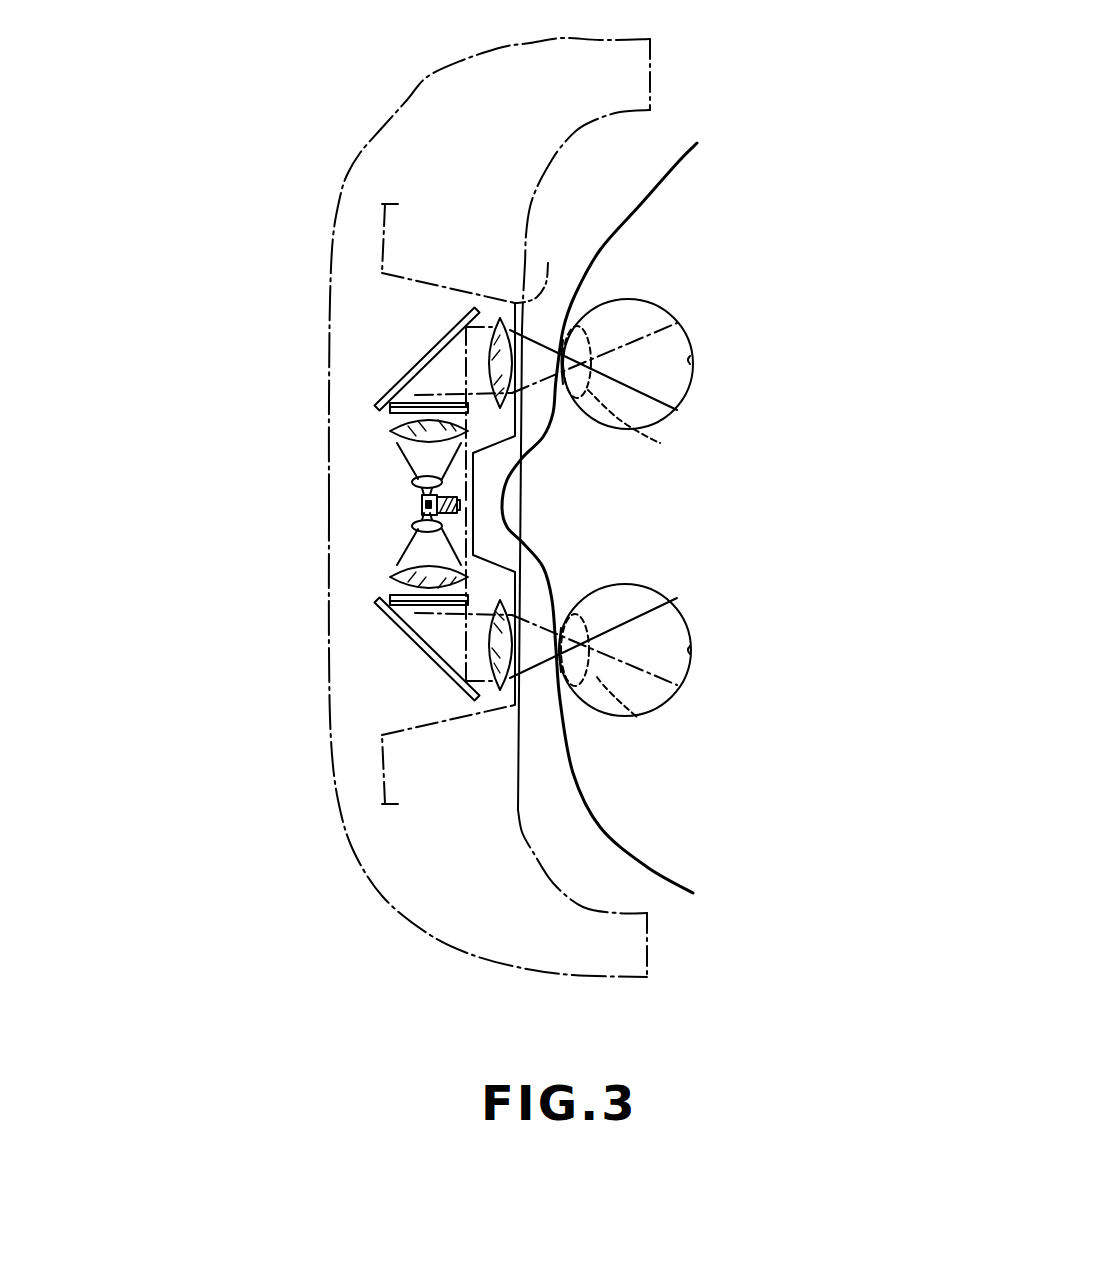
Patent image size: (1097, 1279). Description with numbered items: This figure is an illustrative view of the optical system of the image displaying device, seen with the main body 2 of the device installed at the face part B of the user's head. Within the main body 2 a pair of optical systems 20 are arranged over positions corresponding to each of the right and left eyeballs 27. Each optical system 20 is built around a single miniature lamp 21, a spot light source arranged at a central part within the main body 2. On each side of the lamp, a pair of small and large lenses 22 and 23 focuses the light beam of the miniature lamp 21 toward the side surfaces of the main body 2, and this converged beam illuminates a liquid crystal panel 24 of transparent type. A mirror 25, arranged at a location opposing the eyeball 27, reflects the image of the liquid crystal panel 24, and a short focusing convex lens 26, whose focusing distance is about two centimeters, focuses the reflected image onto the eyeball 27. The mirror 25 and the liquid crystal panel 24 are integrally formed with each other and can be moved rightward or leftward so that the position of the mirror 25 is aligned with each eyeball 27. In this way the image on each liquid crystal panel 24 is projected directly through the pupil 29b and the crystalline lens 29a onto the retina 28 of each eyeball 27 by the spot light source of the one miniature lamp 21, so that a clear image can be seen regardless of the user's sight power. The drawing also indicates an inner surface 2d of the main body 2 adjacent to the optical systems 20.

The main body of the device 2 is at (380, 900).
The inner surface of housing 2d is at (548, 263).
The face part B is at (691, 140).
The optical system 20 is at (543, 415).
The miniature lamp 21 is at (420, 505).
The small lens 22 is at (415, 478).
The large lens 23 is at (397, 435).
The liquid crystal panel 24 is at (387, 410).
The mirror 25 is at (413, 367).
The short focusing convex lens 26 is at (500, 317).
The eyeball 27 is at (672, 305).
The retina 28 is at (691, 361).
The crystalline lens 29a is at (660, 443).
The pupil 29b is at (571, 388).